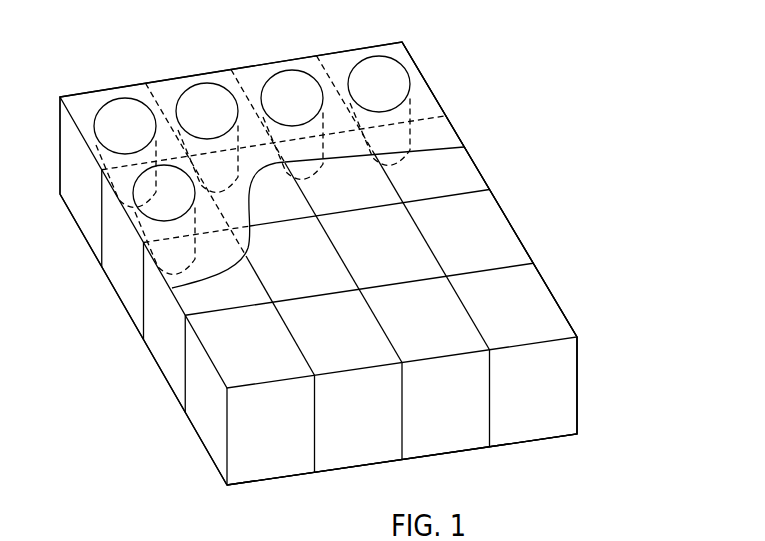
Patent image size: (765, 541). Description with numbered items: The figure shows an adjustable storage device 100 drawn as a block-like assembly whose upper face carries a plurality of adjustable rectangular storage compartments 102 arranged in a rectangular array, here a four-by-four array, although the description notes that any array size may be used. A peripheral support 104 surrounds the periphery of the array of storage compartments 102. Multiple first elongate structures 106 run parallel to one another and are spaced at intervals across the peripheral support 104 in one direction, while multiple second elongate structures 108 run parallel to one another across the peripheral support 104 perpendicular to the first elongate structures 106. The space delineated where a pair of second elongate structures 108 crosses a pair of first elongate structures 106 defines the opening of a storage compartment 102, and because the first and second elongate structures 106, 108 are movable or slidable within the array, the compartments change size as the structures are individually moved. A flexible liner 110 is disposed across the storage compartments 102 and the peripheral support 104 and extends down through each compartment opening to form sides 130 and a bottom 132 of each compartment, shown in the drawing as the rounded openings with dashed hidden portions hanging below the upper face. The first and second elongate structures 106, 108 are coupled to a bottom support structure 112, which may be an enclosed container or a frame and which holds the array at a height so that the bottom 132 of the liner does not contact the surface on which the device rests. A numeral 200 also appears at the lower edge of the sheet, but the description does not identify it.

The adjustable storage device 100 is at (572, 160).
The adjustable rectangular storage compartments 102 is at (252, 165).
The peripheral support 104 is at (178, 78).
The first elongate structures 106 is at (478, 328).
The second elongate structures 108 is at (500, 266).
The flexible liner 110 is at (409, 62).
The bottom support structure 112 is at (578, 390).
The sides 130 is at (409, 108).
The bottom 132 is at (392, 163).
The device 200 is at (620, 540).